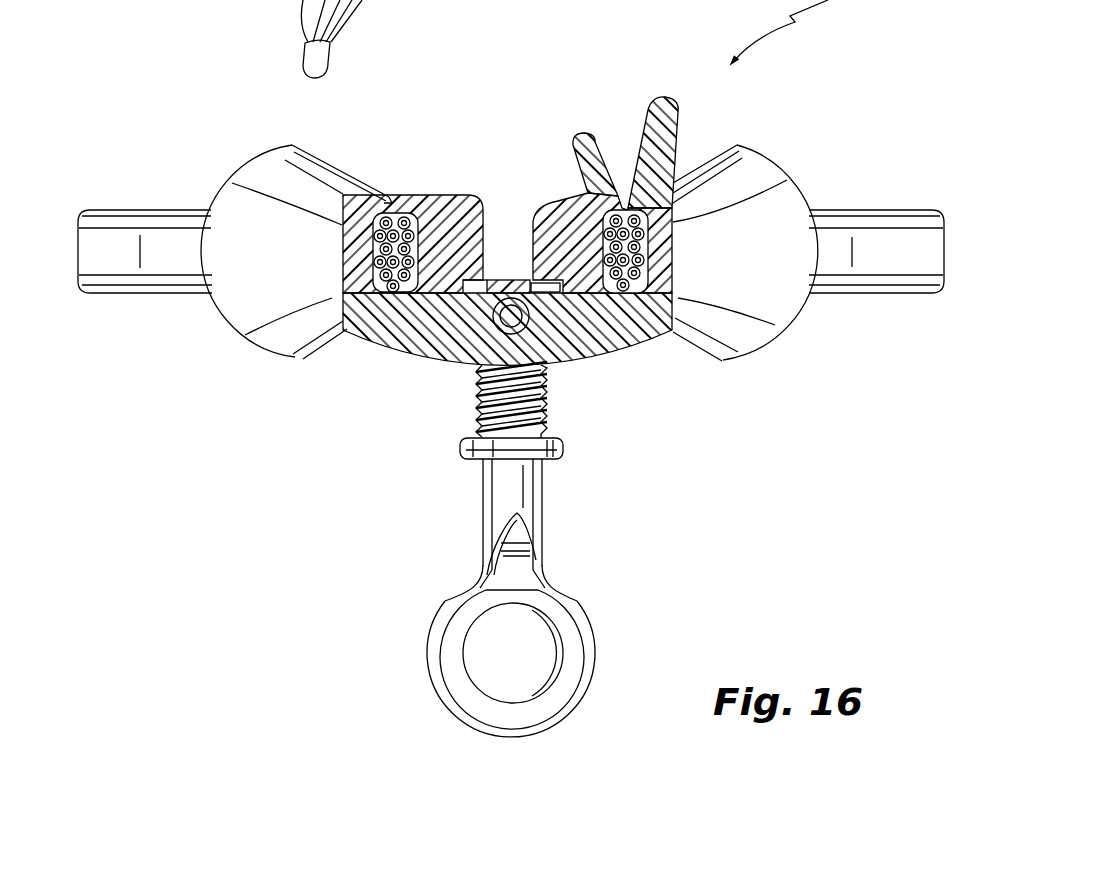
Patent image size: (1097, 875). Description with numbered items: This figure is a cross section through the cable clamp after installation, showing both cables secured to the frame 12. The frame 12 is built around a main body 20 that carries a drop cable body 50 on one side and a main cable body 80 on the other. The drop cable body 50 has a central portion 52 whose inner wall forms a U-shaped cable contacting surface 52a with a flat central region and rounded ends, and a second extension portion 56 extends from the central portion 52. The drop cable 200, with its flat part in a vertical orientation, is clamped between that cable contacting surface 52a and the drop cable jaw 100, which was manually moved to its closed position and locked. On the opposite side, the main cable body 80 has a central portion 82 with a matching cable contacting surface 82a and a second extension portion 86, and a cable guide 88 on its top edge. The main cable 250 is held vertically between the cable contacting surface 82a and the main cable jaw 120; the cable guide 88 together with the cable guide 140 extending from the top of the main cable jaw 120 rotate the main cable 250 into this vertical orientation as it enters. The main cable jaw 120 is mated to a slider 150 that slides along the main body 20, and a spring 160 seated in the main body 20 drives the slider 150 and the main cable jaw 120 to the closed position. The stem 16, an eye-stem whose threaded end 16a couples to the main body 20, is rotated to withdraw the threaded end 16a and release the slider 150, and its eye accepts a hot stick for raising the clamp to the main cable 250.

The frame 12 is at (516, 263).
The stem 16 is at (566, 551).
The threaded end 16a is at (546, 398).
The main body 20 is at (381, 353).
The drop cable body 50 is at (352, 168).
The central portion 52 is at (341, 253).
The cable contacting surface 52a is at (360, 335).
The second extension portion 56 is at (252, 162).
The main cable body 80 is at (687, 150).
The central portion 82 is at (673, 243).
The cable contacting surface 82a is at (673, 293).
The second extension portion 86 is at (773, 160).
The cable guide 88 is at (665, 98).
The drop cable jaw 100 is at (453, 193).
The main cable jaw 120 is at (550, 188).
The cable guide 140 is at (576, 136).
The slider 150 is at (500, 277).
The spring 160 is at (473, 350).
The drop cable 200 is at (110, 237).
The main cable 250 is at (900, 242).